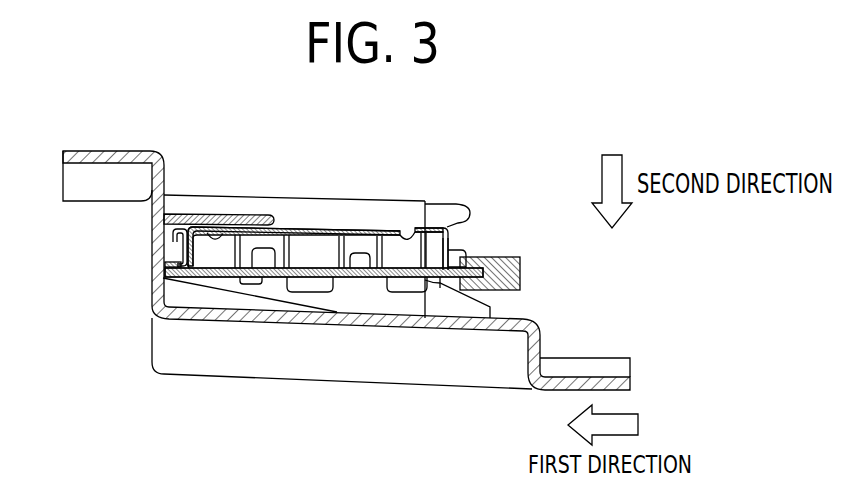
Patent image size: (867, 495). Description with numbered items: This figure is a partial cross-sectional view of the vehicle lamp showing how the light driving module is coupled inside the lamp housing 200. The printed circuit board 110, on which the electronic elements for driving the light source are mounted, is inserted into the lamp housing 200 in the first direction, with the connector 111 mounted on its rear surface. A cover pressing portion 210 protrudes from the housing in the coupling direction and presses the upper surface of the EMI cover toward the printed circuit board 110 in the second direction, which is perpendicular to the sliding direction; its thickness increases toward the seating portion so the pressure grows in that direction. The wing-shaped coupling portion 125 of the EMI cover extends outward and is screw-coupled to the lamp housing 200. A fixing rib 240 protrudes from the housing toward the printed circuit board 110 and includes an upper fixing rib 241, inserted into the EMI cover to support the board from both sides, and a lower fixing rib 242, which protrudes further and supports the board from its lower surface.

The lamp housing 200 is at (598, 380).
The cover pressing portion 210 is at (218, 228).
The printed circuit board 110 is at (339, 225).
The coupling portion 125 is at (449, 240).
The connector 111 is at (508, 273).
The fixing rib 240 is at (99, 276).
The upper fixing rib 241 is at (160, 253).
The lower fixing rib 242 is at (173, 300).